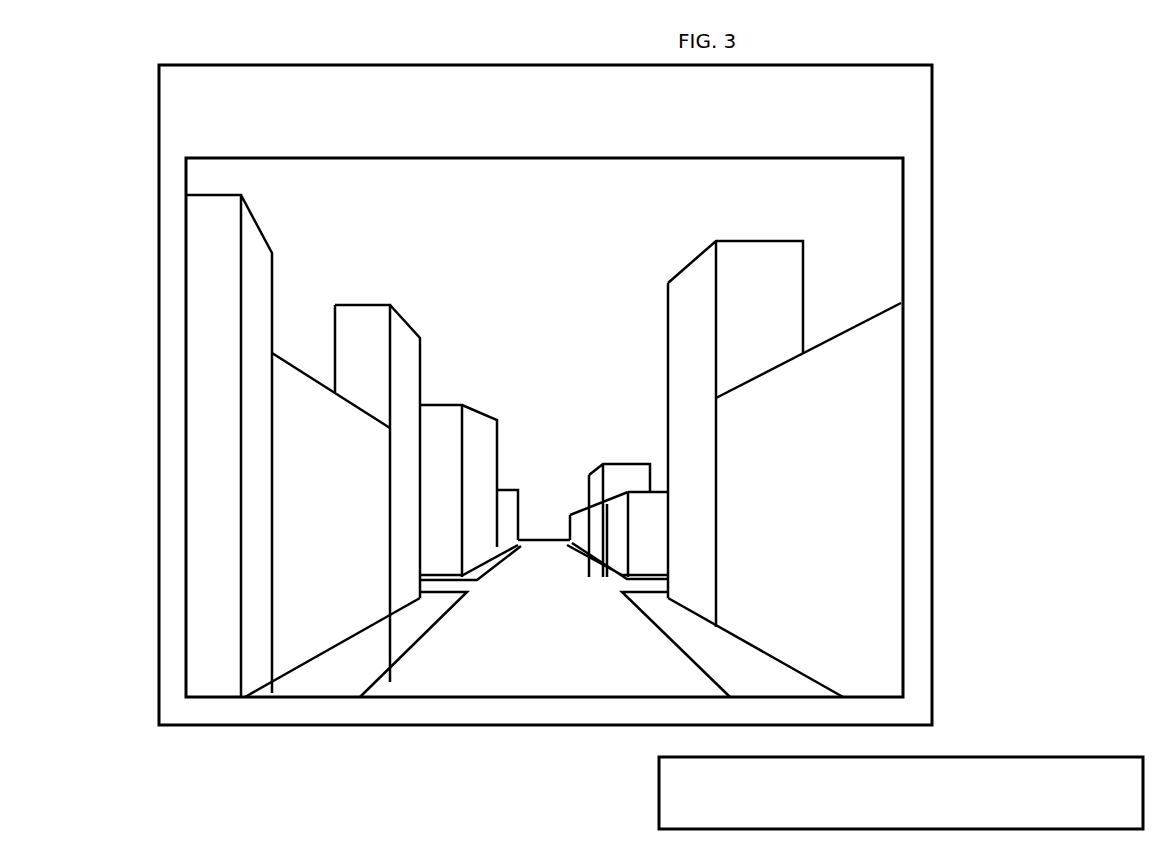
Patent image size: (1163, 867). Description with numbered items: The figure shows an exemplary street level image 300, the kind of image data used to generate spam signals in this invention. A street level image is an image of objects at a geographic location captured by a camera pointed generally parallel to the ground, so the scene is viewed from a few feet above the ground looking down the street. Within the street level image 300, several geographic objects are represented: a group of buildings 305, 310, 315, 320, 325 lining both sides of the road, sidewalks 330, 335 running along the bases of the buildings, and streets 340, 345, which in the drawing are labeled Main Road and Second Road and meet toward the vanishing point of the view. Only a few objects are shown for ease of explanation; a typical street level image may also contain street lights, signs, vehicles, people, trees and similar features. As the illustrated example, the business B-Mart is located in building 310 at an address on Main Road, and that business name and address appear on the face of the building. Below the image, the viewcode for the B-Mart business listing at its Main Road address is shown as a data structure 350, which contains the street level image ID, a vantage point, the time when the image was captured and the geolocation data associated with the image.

The street level image 300 is at (533, 53).
The building 305 is at (228, 467).
The building 310 is at (315, 513).
The building 315 is at (400, 513).
The building 320 is at (780, 300).
The building 325 is at (880, 351).
The sidewalk 330 is at (332, 682).
The sidewalk 335 is at (755, 685).
The street 340 is at (575, 670).
The street 345 is at (598, 593).
The viewcode data structure 350 is at (1037, 757).